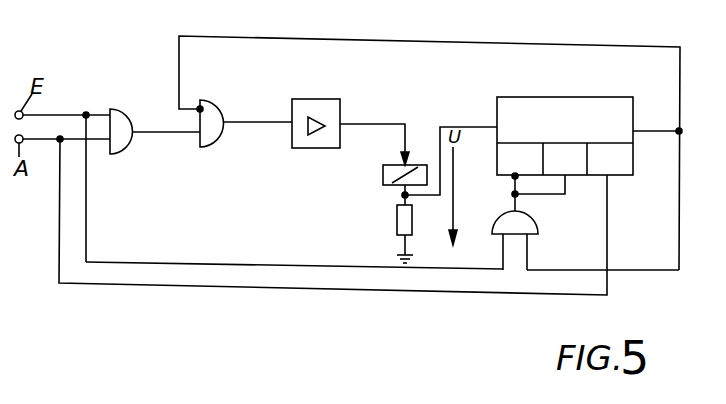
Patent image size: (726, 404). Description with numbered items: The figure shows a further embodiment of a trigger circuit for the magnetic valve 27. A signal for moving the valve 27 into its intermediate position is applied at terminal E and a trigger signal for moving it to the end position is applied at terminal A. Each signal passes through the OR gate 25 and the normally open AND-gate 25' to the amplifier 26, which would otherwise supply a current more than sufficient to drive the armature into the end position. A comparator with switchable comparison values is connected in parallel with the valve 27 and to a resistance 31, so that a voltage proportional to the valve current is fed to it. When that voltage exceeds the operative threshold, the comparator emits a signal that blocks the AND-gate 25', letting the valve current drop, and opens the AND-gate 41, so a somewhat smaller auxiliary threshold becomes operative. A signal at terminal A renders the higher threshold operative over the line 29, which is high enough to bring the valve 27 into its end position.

The OR gate 25 is at (155, 110).
The normally open AND-gate 25' is at (246, 144).
The amplifier 26 is at (328, 108).
The valve 27 is at (383, 172).
The line 29 is at (418, 294).
The resistance 31 is at (397, 217).
The AND-gate 41 is at (525, 223).